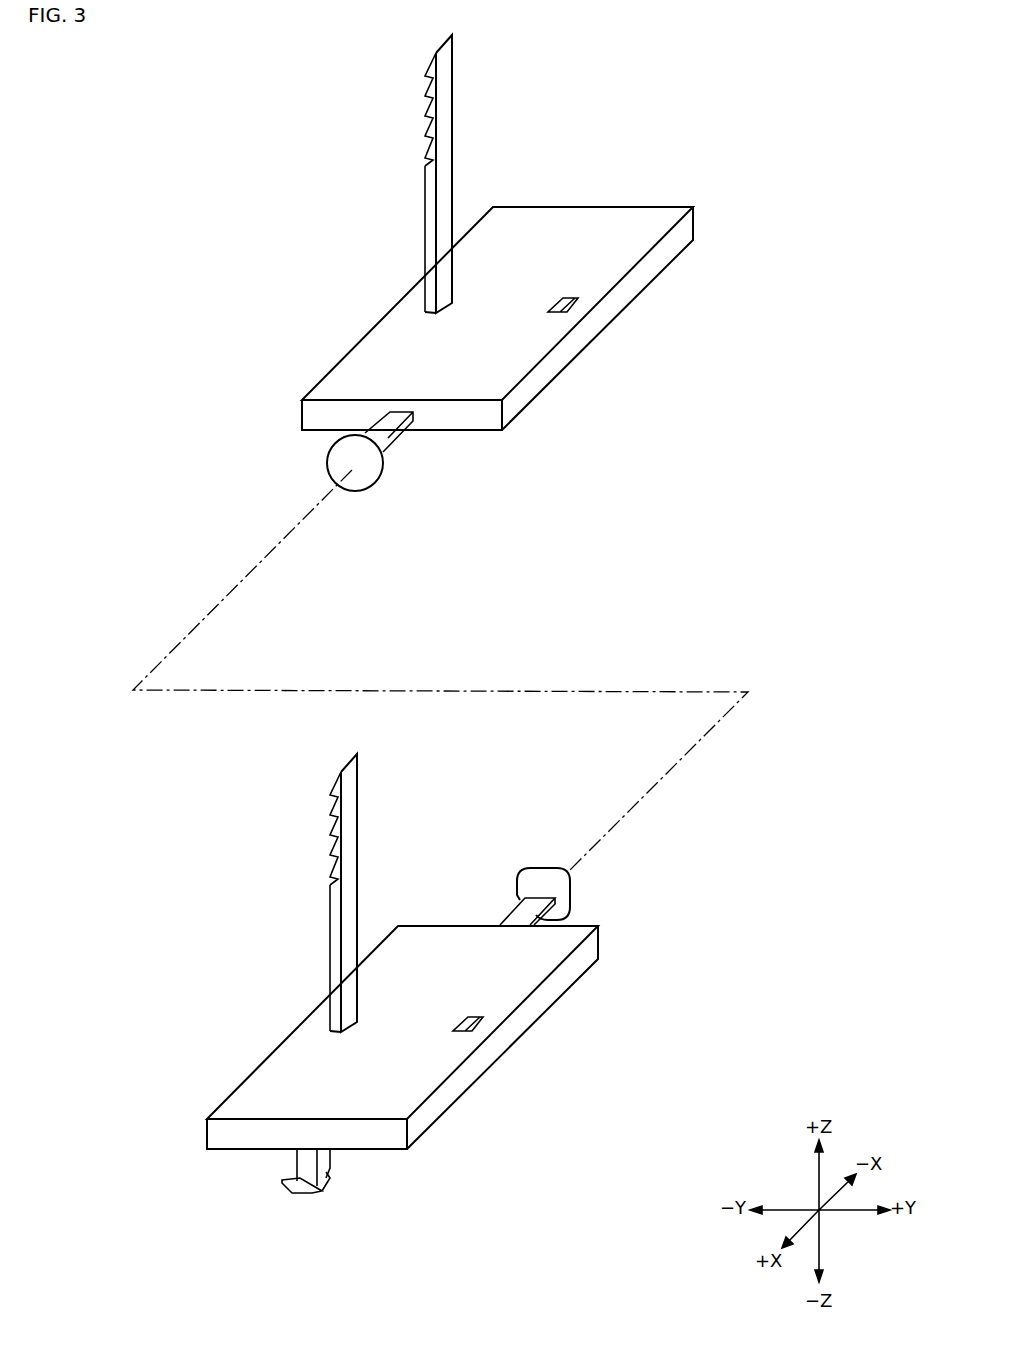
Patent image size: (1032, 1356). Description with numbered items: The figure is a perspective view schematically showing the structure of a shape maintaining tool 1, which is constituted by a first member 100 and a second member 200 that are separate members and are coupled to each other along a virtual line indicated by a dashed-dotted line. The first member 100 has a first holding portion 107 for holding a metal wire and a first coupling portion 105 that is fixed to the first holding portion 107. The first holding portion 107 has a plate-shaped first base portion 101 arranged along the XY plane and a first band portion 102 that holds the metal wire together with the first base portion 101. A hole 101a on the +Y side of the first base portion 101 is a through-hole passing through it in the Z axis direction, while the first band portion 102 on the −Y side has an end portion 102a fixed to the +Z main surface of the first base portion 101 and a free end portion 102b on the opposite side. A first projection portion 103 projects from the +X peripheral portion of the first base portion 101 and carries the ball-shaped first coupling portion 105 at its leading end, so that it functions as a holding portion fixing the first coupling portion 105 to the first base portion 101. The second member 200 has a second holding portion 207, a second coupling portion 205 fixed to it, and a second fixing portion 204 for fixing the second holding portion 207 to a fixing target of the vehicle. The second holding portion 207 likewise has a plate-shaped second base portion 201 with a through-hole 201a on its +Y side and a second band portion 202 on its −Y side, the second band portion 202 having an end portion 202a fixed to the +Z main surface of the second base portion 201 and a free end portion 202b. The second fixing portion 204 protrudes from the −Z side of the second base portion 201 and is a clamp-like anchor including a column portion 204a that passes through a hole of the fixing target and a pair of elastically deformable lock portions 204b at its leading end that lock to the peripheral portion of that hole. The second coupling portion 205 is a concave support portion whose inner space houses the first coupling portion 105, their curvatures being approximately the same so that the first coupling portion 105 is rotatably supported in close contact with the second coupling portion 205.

The shape maintaining tool 1 is at (492, 631).
The first member 100 is at (520, 286).
The first base portion 101 is at (486, 318).
The hole 101a is at (568, 282).
The first band portion 102 is at (359, 174).
The end portion 102a is at (430, 293).
The end portion 102b is at (428, 83).
The first projection portion 103 is at (400, 438).
The first coupling portion 105 is at (382, 472).
The first holding portion 107 is at (456, 232).
The second member 200 is at (473, 903).
The second base portion 201 is at (391, 1037).
The hole 201a is at (531, 1034).
The second band portion 202 is at (264, 893).
The end portion 202a is at (282, 958).
The end portion 202b is at (285, 828).
The second fixing portion 204 is at (246, 1188).
The column portion 204a is at (303, 1162).
The lock portions 204b is at (335, 1166).
The second coupling portion 205 is at (544, 868).
The second holding portion 207 is at (361, 951).